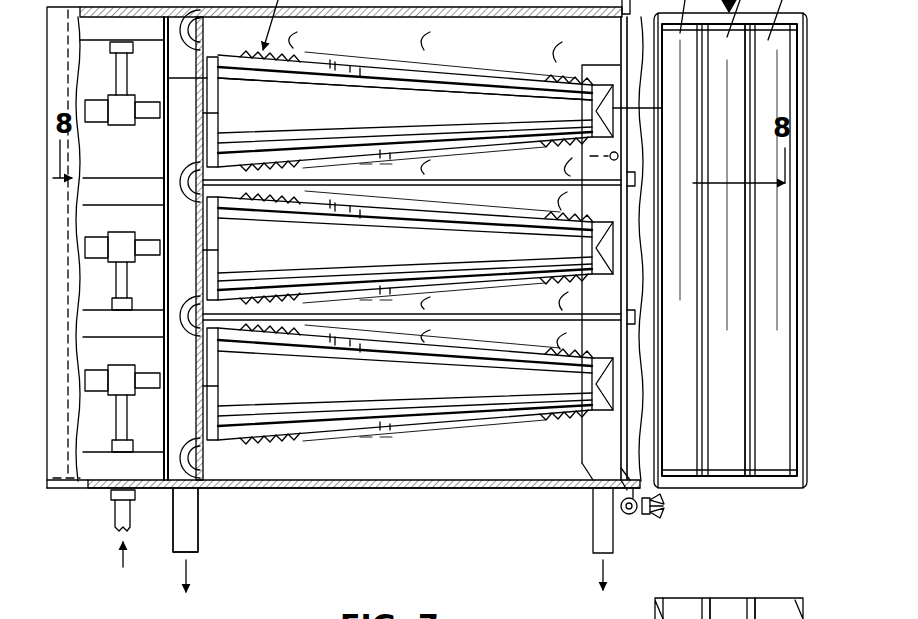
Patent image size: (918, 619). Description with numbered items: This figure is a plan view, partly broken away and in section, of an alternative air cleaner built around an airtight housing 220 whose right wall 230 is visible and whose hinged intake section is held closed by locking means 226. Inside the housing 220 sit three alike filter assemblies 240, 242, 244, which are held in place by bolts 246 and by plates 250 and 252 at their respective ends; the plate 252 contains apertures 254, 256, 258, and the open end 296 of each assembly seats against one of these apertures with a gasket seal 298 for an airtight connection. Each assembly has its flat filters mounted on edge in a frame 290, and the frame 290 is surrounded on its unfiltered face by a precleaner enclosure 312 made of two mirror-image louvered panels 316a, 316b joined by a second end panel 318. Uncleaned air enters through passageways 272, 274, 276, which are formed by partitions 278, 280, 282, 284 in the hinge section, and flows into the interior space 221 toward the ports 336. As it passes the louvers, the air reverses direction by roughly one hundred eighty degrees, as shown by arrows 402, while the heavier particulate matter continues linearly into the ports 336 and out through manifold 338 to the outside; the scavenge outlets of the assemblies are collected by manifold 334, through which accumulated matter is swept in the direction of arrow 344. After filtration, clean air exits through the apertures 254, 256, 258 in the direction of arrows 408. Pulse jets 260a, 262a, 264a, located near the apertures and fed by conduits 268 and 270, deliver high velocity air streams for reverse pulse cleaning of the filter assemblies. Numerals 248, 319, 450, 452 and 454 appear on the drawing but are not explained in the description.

The airtight housing 220 is at (367, 492).
The interior space 221 is at (503, 462).
The locking means 226 is at (630, 512).
The right wall 230 is at (447, 492).
The filter assembly 240 is at (363, 123).
The filter assembly 242 is at (343, 257).
The filter assembly 244 is at (343, 397).
The bolts 246 is at (526, 185).
The helical flight 248 is at (528, 313).
The plate 250 is at (619, 157).
The plate 252 is at (200, 418).
The aperture 254 is at (205, 113).
The aperture 256 is at (205, 250).
The aperture 258 is at (205, 386).
The pulse jet 260a is at (183, 127).
The pulse jet 262a is at (183, 233).
The pulse jet 264a is at (183, 365).
The conduit 268 is at (142, 318).
The conduit 270 is at (108, 470).
The passageway 272 is at (676, 610).
The passageway 274 is at (722, 612).
The passageway 276 is at (775, 612).
The partition 278 is at (682, 48).
The partition 280 is at (725, 61).
The partition 282 is at (742, 148).
The partition 284 is at (792, 236).
The frame 290 is at (423, 110).
The open end 296 is at (160, 78).
The gasket seal 298 is at (200, 150).
The precleaner enclosure 312 is at (490, 85).
The louvered panel 316a is at (363, 62).
The louvered panel 316b is at (424, 164).
The second end panel 318 is at (661, 104).
The serrated flight edge 319 is at (543, 150).
The manifold 334 is at (597, 447).
The ports 336 is at (168, 197).
The manifold 338 is at (182, 548).
The arrow 344 is at (603, 575).
The arrows 402 is at (287, 457).
The arrows 408 is at (203, 103).
The nozzle 450 is at (98, 102).
The nozzle 452 is at (97, 258).
The nozzle 454 is at (97, 392).